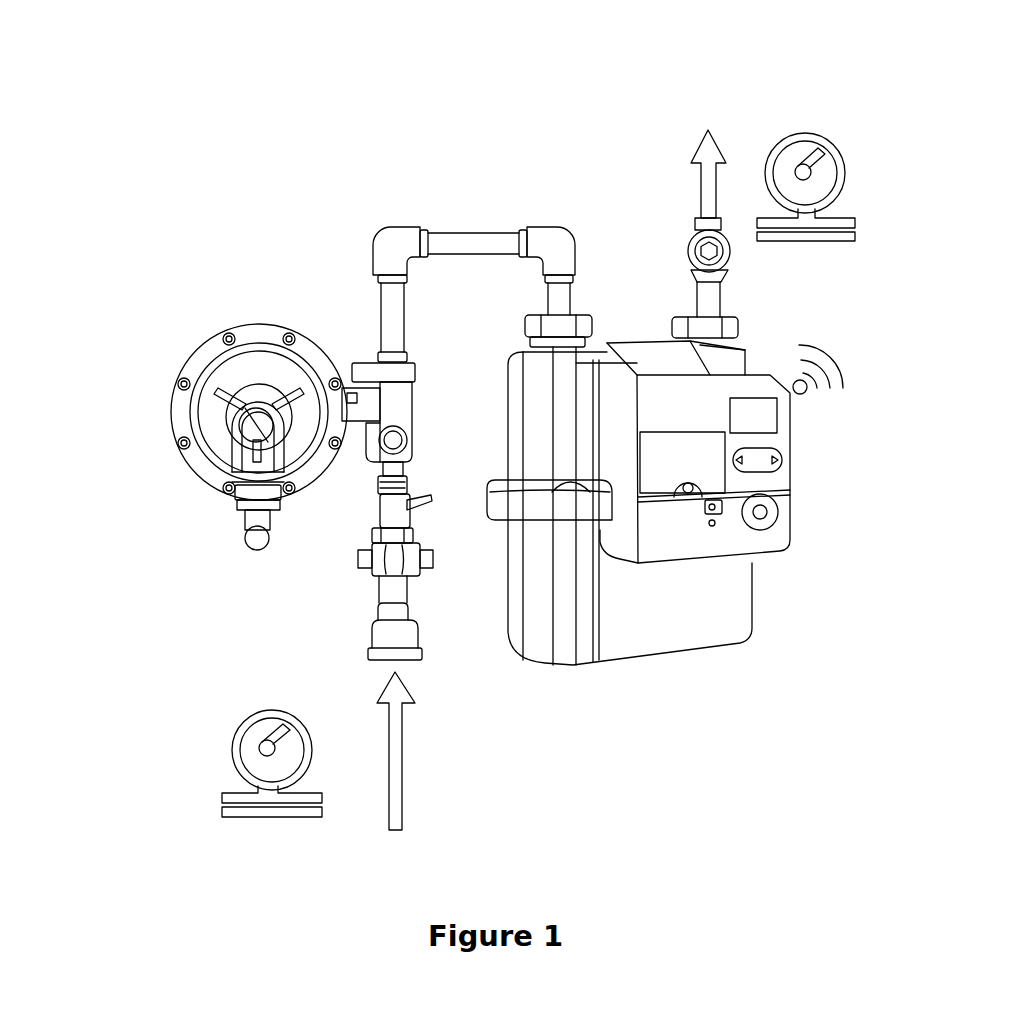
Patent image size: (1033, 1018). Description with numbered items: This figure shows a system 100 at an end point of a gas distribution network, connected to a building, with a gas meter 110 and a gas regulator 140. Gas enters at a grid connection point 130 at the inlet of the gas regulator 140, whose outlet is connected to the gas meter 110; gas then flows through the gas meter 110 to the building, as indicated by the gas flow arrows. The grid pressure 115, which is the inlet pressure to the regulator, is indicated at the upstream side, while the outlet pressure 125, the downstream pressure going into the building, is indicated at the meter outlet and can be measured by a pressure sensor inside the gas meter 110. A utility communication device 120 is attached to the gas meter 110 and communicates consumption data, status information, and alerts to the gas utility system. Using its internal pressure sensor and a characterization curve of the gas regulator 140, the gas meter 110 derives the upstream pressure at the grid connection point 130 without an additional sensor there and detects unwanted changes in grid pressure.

The system 100 is at (444, 156).
The gas meter 110 is at (745, 342).
The grid pressure 115 is at (232, 745).
The utility communication device 120 is at (711, 405).
The outlet pressure 125 is at (800, 133).
The grid connection point 130 is at (378, 600).
The gas regulator 140 is at (262, 322).